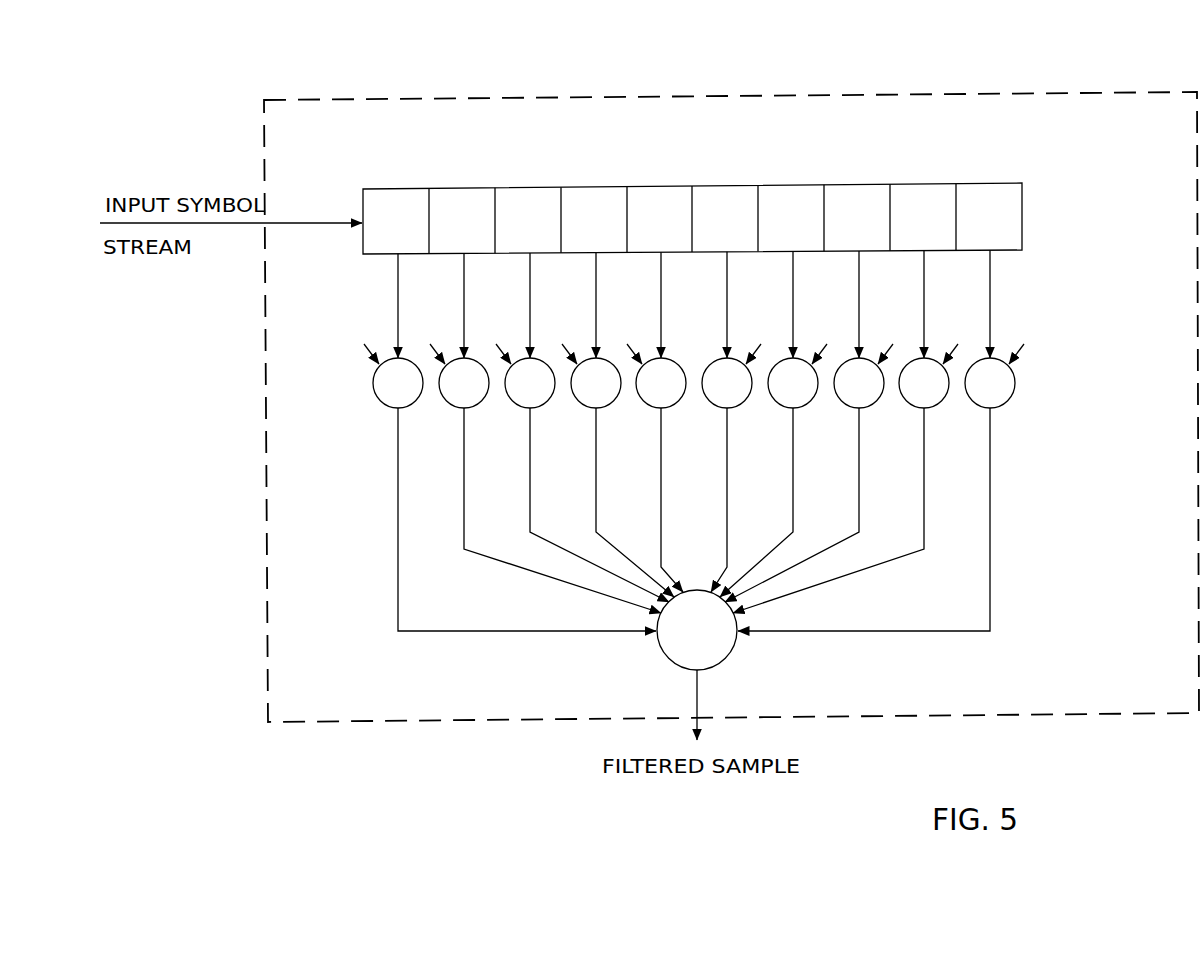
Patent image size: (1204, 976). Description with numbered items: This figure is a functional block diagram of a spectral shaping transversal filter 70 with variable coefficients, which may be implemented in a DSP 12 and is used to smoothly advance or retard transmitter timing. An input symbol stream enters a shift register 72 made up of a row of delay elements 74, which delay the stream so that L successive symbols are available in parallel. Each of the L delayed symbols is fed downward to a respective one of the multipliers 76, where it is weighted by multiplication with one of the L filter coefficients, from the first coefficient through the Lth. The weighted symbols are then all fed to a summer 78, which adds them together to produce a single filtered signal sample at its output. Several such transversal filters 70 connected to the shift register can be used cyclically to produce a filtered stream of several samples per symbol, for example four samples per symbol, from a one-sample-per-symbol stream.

The DSP 12 is at (1083, 92).
The spectral shaping transversal filter 70 is at (1075, 229).
The shift register 72 is at (375, 182).
The delay elements 74 is at (393, 188).
The multipliers 76 is at (381, 402).
The summer 78 is at (725, 658).